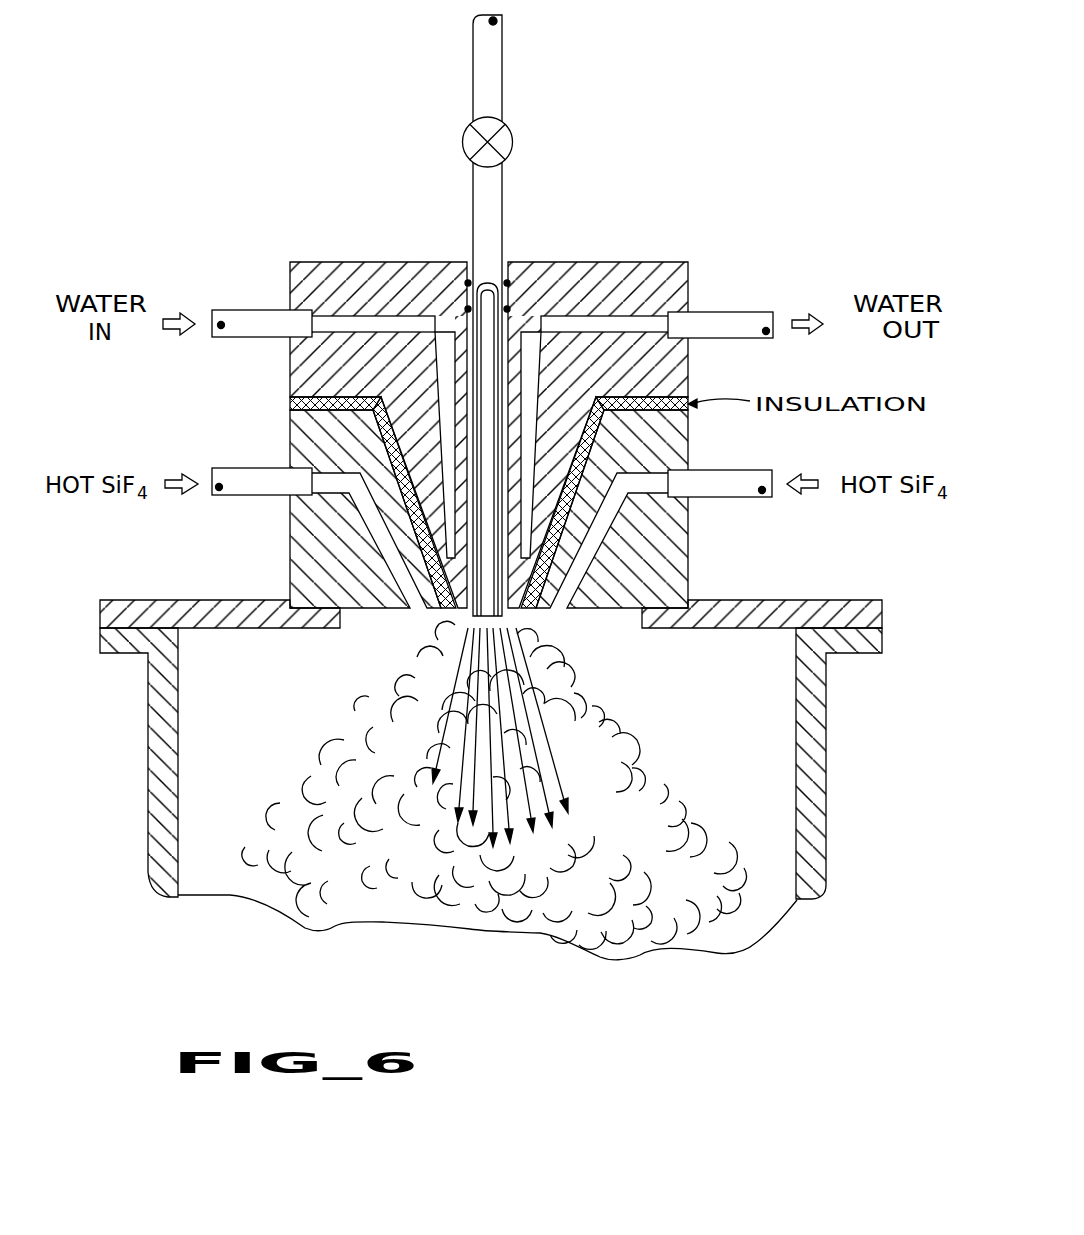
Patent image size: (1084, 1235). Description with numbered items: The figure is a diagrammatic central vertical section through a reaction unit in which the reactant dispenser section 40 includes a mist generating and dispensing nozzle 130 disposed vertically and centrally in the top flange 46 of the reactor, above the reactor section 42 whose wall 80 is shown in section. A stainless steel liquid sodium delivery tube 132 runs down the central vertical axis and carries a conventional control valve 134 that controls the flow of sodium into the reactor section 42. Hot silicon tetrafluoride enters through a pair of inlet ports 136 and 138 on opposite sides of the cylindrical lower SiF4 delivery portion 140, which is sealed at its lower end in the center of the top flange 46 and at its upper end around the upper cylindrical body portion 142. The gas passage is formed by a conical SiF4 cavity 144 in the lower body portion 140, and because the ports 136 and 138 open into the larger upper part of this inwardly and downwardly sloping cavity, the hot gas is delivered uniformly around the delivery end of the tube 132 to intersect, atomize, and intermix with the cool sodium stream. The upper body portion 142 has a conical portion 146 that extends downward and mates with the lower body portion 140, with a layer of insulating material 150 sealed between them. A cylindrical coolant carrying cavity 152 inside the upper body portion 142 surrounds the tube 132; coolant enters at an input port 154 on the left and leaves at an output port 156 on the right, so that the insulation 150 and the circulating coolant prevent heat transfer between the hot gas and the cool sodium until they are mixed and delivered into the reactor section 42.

The reactant dispenser section 40 is at (499, 608).
The reactor section 42 is at (499, 794).
The top flange 46 is at (766, 607).
The chamber wall 80 is at (817, 858).
The mist generating and dispensing nozzle 130 is at (495, 344).
The liquid sodium delivery tube 132 is at (498, 186).
The control valve 134 is at (505, 137).
The inlet port 136 is at (236, 492).
The inlet port 138 is at (745, 498).
The cylindrical lower SiF4 delivery portion 140 is at (296, 560).
The upper cylindrical body portion 142 is at (290, 273).
The conical SiF4 cavity 144 is at (418, 612).
The conical portion 146 is at (404, 440).
The layer of insulating material 150 is at (676, 398).
The cylindrical coolant carrying cavity 152 is at (442, 263).
The input port 154 is at (237, 316).
The output port 156 is at (752, 338).